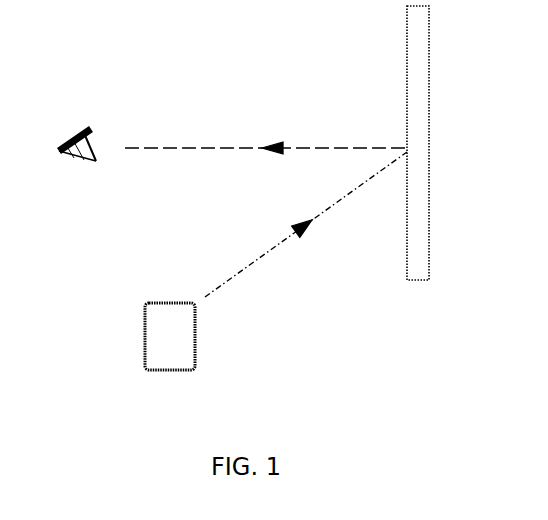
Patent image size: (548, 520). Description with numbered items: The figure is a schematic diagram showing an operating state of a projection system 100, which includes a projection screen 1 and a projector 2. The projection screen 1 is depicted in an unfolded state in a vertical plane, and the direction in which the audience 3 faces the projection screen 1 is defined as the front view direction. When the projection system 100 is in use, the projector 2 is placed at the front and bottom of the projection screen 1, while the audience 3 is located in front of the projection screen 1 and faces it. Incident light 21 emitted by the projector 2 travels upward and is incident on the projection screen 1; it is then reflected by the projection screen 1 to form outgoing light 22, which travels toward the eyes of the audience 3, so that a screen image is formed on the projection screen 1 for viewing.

The projection screen 1 is at (412, 282).
The projector 2 is at (197, 340).
The incident light 21 is at (263, 250).
The outgoing light 22 is at (207, 147).
The audience 3 is at (83, 118).
The projection system 100 is at (262, 397).